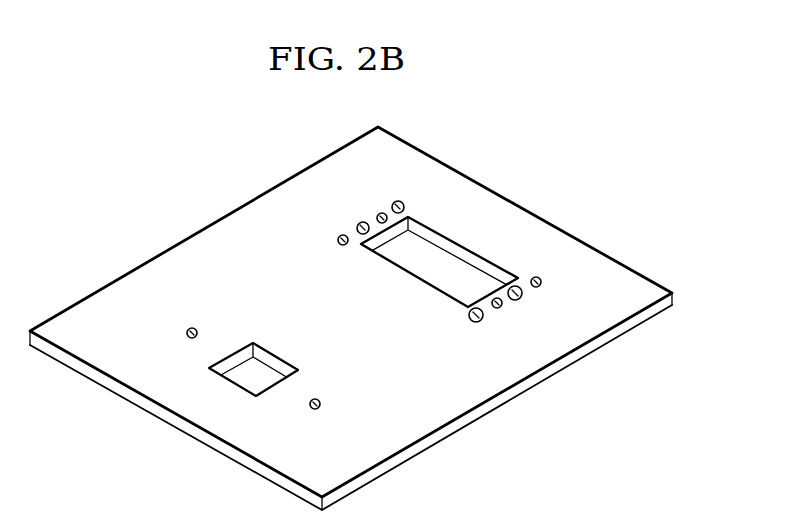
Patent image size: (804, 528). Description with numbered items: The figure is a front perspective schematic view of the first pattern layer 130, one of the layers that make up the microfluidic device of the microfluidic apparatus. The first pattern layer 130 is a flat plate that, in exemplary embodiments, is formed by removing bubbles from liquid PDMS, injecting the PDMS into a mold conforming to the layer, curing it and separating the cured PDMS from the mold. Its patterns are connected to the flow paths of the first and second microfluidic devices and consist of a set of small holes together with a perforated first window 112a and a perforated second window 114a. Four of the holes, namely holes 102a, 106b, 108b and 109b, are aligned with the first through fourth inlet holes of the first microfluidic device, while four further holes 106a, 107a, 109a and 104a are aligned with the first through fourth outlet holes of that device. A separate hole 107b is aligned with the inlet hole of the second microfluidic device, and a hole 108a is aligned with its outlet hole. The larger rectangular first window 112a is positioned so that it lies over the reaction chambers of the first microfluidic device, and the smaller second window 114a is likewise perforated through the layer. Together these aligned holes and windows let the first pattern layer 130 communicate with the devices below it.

The first pattern layer 130 is at (450, 425).
The first window 112a is at (445, 268).
The second window 114a is at (260, 379).
The hole 102a is at (393, 201).
The hole 107a is at (377, 214).
The hole 106b is at (357, 226).
The hole 106a is at (338, 237).
The hole 107b is at (190, 328).
The hole 104a is at (538, 287).
The hole 108b is at (518, 299).
The hole 109a is at (497, 308).
The hole 109b is at (476, 321).
The hole 108a is at (317, 408).